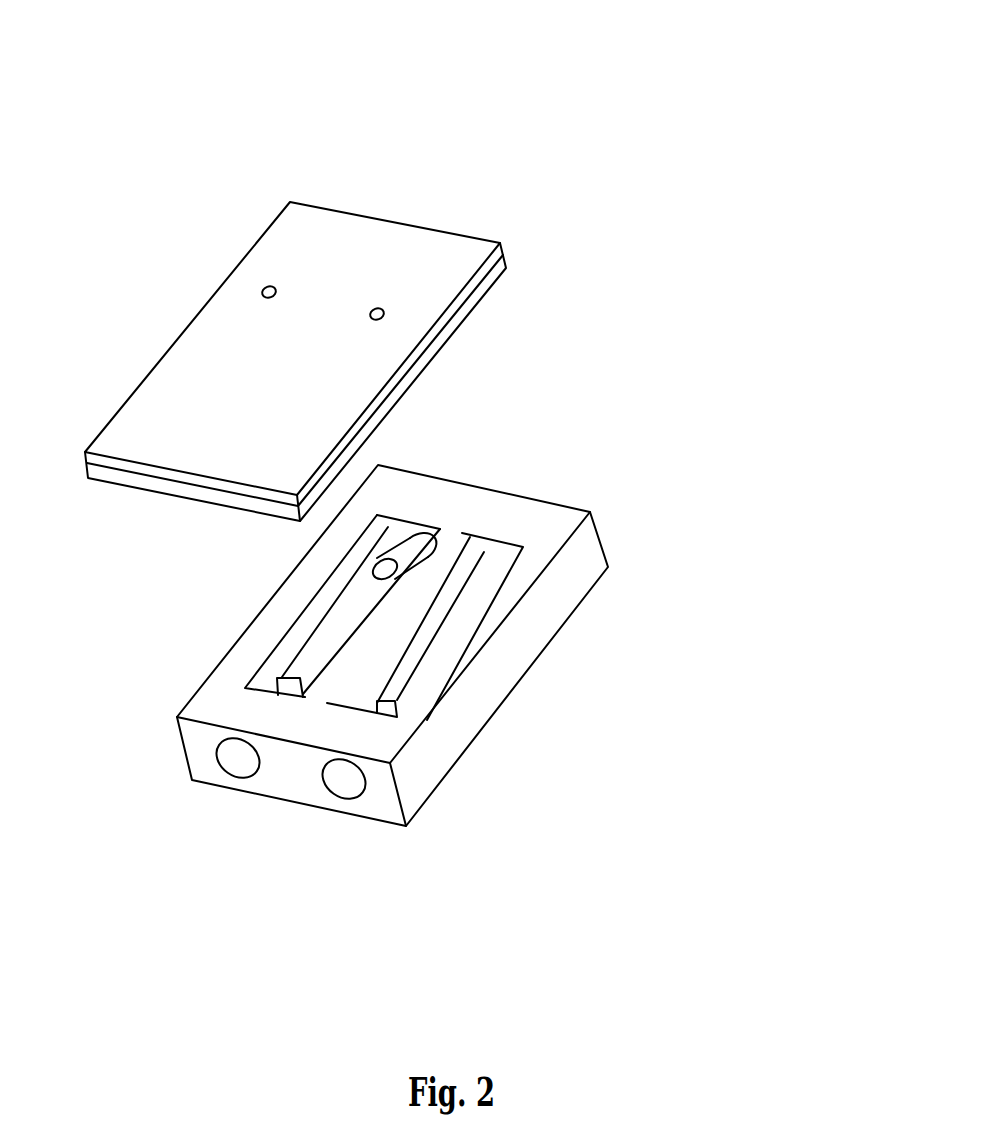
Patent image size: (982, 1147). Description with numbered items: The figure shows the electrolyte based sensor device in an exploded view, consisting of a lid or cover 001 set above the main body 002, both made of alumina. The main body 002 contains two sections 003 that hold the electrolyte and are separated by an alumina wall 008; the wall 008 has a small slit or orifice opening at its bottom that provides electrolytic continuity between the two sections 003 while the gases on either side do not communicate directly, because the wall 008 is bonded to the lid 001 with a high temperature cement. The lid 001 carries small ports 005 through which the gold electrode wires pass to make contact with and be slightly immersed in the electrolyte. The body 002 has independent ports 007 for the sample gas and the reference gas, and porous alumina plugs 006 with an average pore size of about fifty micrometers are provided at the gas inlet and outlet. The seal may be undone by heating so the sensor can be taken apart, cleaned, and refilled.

The lid 001 is at (509, 246).
The main body 002 is at (539, 667).
The sections 003 is at (350, 626).
The small ports 005 is at (280, 287).
The porous alumina plugs 006 is at (397, 540).
The independent ports 007 is at (249, 782).
The alumina wall 008 is at (342, 673).